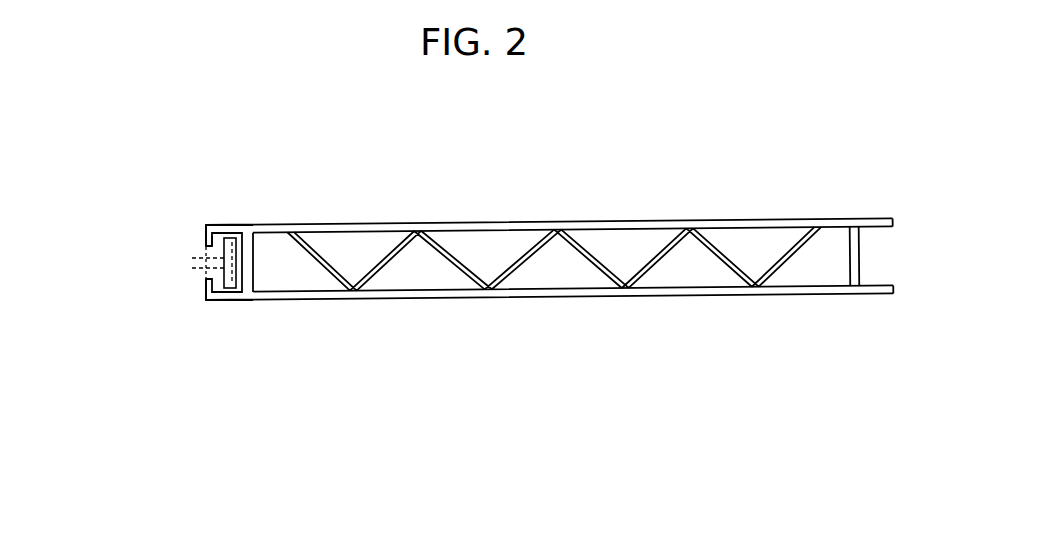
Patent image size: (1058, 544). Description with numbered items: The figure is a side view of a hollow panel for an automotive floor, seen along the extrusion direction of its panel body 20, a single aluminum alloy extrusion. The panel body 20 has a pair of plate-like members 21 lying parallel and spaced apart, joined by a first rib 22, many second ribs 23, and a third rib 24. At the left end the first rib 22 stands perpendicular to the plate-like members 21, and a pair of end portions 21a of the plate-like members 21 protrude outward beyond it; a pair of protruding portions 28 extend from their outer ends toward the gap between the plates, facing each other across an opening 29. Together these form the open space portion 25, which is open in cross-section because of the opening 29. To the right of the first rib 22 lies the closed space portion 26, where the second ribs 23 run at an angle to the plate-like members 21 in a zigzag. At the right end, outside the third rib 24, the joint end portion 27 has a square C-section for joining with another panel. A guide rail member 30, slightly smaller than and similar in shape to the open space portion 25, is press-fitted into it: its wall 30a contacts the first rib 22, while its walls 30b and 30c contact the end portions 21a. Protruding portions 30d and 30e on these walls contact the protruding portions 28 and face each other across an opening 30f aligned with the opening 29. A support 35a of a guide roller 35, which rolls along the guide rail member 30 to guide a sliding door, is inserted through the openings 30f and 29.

The panel body 20 is at (862, 422).
The plate-like members 21 is at (497, 219).
The end portions of the plate-like members 21a is at (222, 224).
The first rib 22 is at (252, 272).
The second ribs 23 is at (392, 256).
The third rib 24 is at (847, 252).
The open space portion 25 is at (224, 272).
The closed space portion 26 is at (549, 287).
The joint end portion 27 is at (847, 281).
The protruding portions 28 is at (207, 237).
The opening 29 is at (205, 250).
The guide rail member 30 is at (208, 280).
The wall 30a is at (244, 277).
The wall 30b is at (228, 236).
The wall 30c is at (231, 302).
The protruding portion 30d is at (208, 246).
The protruding portion 30e is at (208, 293).
The opening 30f is at (211, 252).
The guide roller 35 is at (268, 220).
The support 35a is at (174, 271).